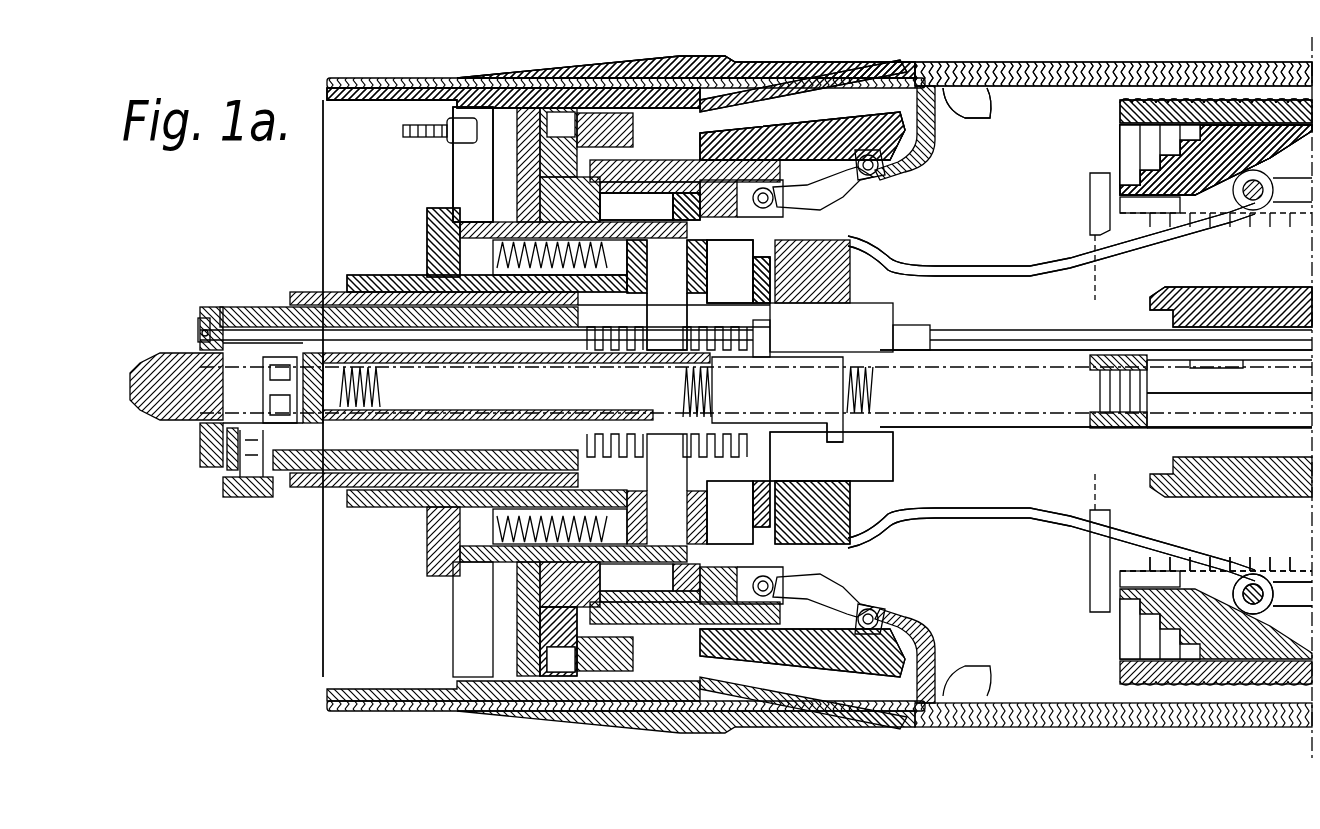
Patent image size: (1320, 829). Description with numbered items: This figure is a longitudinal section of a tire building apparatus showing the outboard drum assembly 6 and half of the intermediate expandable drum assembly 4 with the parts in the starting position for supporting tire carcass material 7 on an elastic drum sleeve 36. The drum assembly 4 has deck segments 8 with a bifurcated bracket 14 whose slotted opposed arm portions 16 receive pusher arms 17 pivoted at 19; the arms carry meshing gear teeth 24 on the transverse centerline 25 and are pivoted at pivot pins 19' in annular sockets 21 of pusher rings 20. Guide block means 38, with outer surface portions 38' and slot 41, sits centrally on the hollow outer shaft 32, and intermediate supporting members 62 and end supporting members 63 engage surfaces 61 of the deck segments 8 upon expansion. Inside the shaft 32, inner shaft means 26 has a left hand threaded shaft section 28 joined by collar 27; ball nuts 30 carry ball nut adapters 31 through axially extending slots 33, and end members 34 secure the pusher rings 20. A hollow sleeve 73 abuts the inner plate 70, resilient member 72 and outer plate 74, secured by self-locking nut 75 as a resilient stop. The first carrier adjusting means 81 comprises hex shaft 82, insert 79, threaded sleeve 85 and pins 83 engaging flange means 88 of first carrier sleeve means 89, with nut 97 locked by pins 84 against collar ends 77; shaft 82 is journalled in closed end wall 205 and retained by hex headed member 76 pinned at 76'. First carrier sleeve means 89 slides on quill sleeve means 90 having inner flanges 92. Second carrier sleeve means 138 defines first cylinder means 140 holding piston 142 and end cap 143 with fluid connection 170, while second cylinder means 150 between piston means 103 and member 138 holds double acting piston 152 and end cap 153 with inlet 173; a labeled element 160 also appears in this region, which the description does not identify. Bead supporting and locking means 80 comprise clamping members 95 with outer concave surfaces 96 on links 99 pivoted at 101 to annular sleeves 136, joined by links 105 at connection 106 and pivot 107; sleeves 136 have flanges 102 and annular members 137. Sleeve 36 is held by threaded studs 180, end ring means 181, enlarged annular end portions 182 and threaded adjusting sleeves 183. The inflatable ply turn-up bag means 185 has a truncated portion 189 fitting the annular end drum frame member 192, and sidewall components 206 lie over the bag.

The outboard drum assembly 6 is at (351, 50).
The inflatable ply turn-up bag means 185 is at (325, 80).
The annular end drum frame member 192 is at (478, 73).
The sidewall components 206 is at (598, 58).
The annular members 137 is at (527, 110).
The threaded studs 180 is at (560, 128).
The end ring means 181 is at (615, 110).
The enlarged annular end portions 182 is at (655, 75).
The truncated portion 189 is at (712, 78).
The pivotal connection 101 is at (758, 75).
The links 99 is at (800, 118).
The clamping members 95 is at (835, 119).
The bead supporting and locking means 80 is at (898, 84).
The end supporting members 63 is at (1150, 73).
The elastic drum sleeve 36 is at (1078, 88).
The tire carcass material 7 is at (1218, 100).
The intermediate supporting members 62 is at (1236, 100).
The threaded adjusting sleeves 183 is at (445, 148).
The second carrier sleeve means 138 is at (470, 195).
The first cylinder means 140 is at (500, 222).
The fluid pressure connection 170 is at (462, 200).
The piston 142 is at (427, 222).
The end cap 143 is at (427, 242).
The first carrier sleeve means 89 is at (360, 280).
The quill sleeve means 90 is at (394, 280).
The closed end wall 205 is at (210, 308).
The resilient member 72 is at (300, 312).
The inner plate 70 is at (310, 292).
The hex headed member 76 is at (173, 322).
The pin 76' is at (176, 338).
The self-locking nut 75 is at (280, 412).
The outer plate 74 is at (287, 490).
The piston means 103 is at (657, 185).
The first fluid pressure inlet and outlet 173 is at (573, 207).
The double acting piston 152 is at (647, 206).
The second cylinder means 150 is at (645, 218).
The end cap 153 is at (760, 205).
The pivot 107 is at (738, 271).
The flange means 88 is at (717, 280).
The column 160 is at (667, 295).
The pins 83 is at (656, 294).
The hex shaft 82 is at (490, 360).
The hollow sleeve 73 is at (563, 425).
The axially extending slots 33 is at (586, 350).
The threaded sleeve 85 is at (725, 355).
The pins 84 is at (790, 351).
The nut 97 is at (770, 355).
The pusher rings 20 is at (815, 300).
The ball nut adapters 31 is at (865, 334).
The ball nuts 30 is at (795, 414).
The hollow outer shaft 32 is at (725, 458).
The end members 34 is at (830, 448).
The insert 79 is at (920, 352).
The left hand threaded shaft section 28 is at (980, 399).
The inner shaft means 26 is at (1081, 426).
The collar 27 is at (1227, 425).
The first carrier adjusting means 81 is at (1163, 352).
The collar ends 77 is at (905, 322).
The pivot pins 19' is at (1051, 388).
The pusher arms 17 is at (978, 268).
The outer surface portions 38' is at (1173, 278).
The guide block means 38 is at (1182, 296).
The annular sockets 21 is at (852, 528).
The inner flanges 92 is at (757, 522).
The annular sleeves 136 is at (607, 641).
The slot 41 is at (1098, 556).
The surfaces 61 is at (1140, 135).
The intermediate expandable drum assembly 4 is at (1084, 150).
The bifurcated bracket 14 is at (1107, 160).
The transverse centerline 25 is at (1312, 153).
The deck segments 8 is at (1108, 194).
The slotted opposed arm portions 16 is at (1092, 213).
The axially inwardly extending flanges 102 is at (978, 100).
The connection 106 is at (872, 172).
The links 105 is at (832, 213).
The outer concave surfaces 96 is at (878, 135).
The pivot 19 is at (1272, 407).
The meshing gear teeth 24 is at (1290, 232).